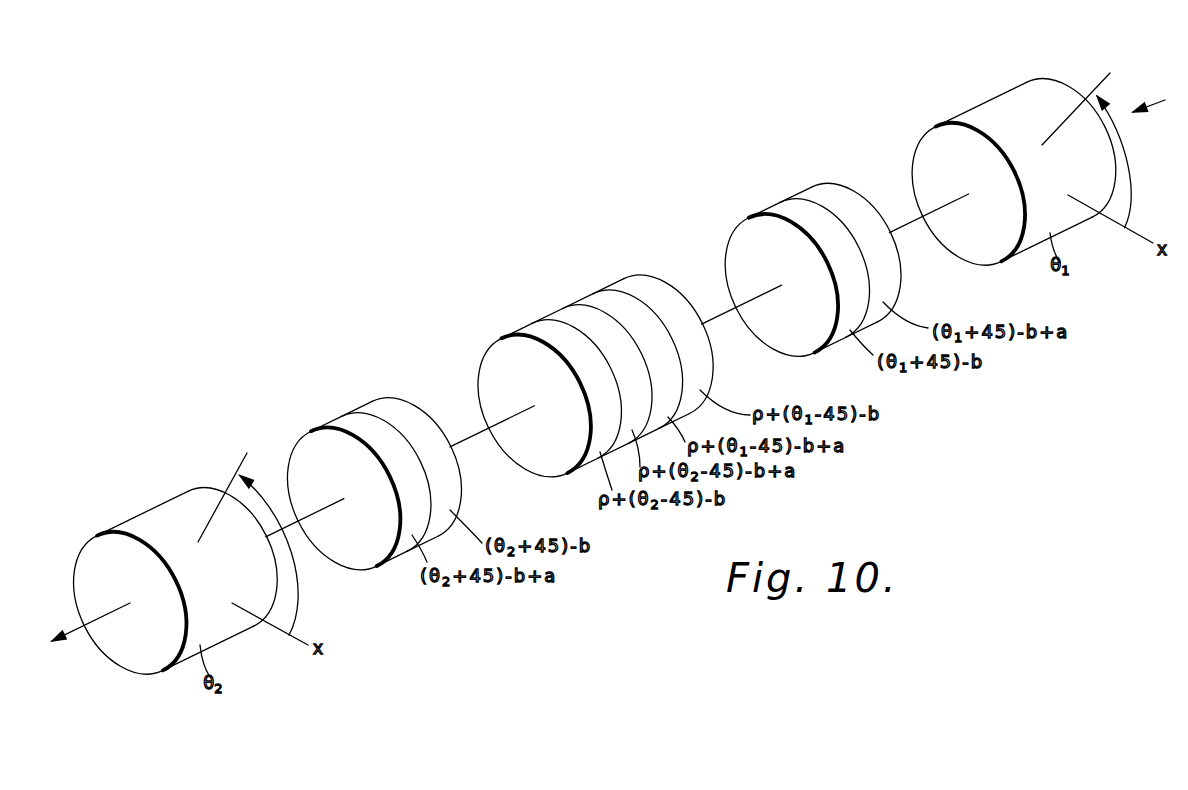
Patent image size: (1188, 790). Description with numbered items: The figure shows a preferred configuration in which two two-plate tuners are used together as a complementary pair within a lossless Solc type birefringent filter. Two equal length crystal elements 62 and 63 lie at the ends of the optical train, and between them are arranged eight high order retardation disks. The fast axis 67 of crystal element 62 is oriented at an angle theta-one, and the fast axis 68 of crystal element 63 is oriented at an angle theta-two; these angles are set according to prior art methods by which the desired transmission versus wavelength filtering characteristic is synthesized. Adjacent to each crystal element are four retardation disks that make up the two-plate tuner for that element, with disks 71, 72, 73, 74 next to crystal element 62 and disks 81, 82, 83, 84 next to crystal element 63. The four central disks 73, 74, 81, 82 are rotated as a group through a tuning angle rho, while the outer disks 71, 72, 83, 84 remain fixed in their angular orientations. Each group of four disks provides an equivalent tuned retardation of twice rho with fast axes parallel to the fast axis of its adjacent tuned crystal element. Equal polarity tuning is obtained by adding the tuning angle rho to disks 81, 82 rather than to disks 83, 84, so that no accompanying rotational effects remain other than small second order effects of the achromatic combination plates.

The crystal element 62 is at (998, 100).
The crystal element 63 is at (160, 508).
The fast axis 67 is at (1110, 73).
The fast axis 68 is at (247, 453).
The retardation disk 71 is at (823, 192).
The retardation disk 72 is at (778, 207).
The retardation disk 73 is at (638, 280).
The retardation disk 74 is at (600, 295).
The retardation disk 81 is at (567, 310).
The retardation disk 82 is at (537, 327).
The retardation disk 83 is at (383, 402).
The retardation disk 84 is at (347, 423).